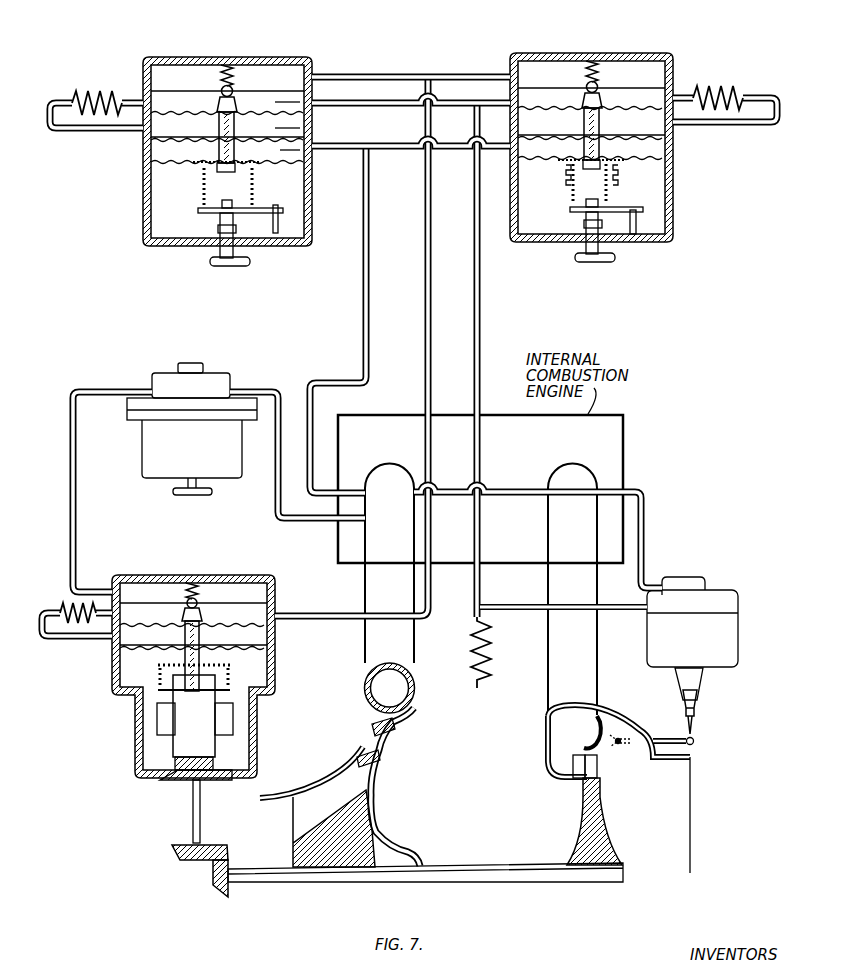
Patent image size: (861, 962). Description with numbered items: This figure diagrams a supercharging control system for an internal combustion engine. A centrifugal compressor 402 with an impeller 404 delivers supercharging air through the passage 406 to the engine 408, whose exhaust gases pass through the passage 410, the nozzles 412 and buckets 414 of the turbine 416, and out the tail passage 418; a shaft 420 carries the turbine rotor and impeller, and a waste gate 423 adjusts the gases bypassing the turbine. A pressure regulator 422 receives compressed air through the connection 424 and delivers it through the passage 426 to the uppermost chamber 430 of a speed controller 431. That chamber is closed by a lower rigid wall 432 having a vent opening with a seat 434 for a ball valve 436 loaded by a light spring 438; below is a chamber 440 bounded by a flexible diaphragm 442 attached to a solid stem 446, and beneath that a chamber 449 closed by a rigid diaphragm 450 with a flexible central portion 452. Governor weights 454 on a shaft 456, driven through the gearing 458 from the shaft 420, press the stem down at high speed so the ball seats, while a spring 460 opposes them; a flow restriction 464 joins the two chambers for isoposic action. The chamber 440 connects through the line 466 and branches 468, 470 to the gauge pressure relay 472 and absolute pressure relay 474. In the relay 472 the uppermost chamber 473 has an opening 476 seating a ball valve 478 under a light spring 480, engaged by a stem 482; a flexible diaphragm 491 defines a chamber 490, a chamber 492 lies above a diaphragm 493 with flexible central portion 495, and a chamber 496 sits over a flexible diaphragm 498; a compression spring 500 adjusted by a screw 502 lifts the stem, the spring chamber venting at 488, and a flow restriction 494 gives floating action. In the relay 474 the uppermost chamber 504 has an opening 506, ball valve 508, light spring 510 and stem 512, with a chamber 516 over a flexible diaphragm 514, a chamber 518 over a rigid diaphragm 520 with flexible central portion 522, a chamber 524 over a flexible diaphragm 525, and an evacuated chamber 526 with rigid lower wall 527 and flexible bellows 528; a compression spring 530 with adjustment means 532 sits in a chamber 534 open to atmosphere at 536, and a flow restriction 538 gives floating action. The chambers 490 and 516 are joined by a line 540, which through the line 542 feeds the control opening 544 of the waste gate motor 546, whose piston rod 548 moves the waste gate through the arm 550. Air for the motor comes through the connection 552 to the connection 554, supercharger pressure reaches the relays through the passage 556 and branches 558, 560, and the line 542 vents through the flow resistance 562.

The centrifugal compressor 402 is at (390, 810).
The impeller 404 is at (302, 835).
The passage 406 is at (410, 658).
The engine 408 is at (507, 468).
The passage 410 is at (548, 540).
The nozzles 412 is at (568, 778).
The buckets 414 is at (598, 770).
The turbine 416 is at (607, 842).
The tail passage 418 is at (690, 836).
The shaft 420 is at (474, 867).
The pressure regulator 422 is at (142, 457).
The waste gate 423 is at (620, 722).
The connection 424 is at (276, 392).
The passage 426 is at (80, 390).
The uppermost chamber 430 is at (258, 594).
The speed controller 431 is at (267, 571).
The lower rigid wall 432 is at (145, 600).
The seat 434 is at (203, 605).
The ball valve 436 is at (198, 600).
The light spring 438 is at (189, 582).
The chamber 440 is at (258, 612).
The flexible diaphragm 442 is at (192, 623).
The solid stem 446 is at (200, 641).
The chamber 449 is at (258, 636).
The rigid diaphragm 450 is at (232, 650).
The flexible central portion 452 is at (172, 662).
The governor weights 454 is at (165, 718).
The shaft 456 is at (192, 813).
The gearing 458 is at (207, 862).
The spring 460 is at (229, 691).
The flow restriction 464 is at (60, 620).
The line 466 is at (430, 288).
The branch 468 is at (364, 74).
The branch 470 is at (456, 74).
The gauge pressure relay 472 is at (156, 46).
The uppermost chamber 473 is at (192, 70).
The absolute pressure relay 474 is at (700, 30).
The opening 476 is at (238, 96).
The ball valve 478 is at (233, 89).
The light spring 480 is at (233, 64).
The stem 482 is at (234, 132).
The vent 488 is at (175, 248).
The chamber 490 is at (280, 102).
The flexible diaphragm 491 is at (196, 116).
The chamber 492 is at (284, 128).
The diaphragm 493 is at (208, 142).
The flow restriction 494 is at (99, 87).
The flexible central portion 495 is at (210, 160).
The chamber 496 is at (290, 150).
The flexible diaphragm 498 is at (169, 184).
The compression spring 500 is at (256, 188).
The screw 502 is at (249, 262).
The uppermost chamber 504 is at (540, 62).
The opening 506 is at (603, 91).
The ball valve 508 is at (597, 84).
The light spring 510 is at (588, 60).
The stem 512 is at (584, 126).
The flexible diaphragm 514 is at (628, 105).
The chamber 516 is at (535, 100).
The chamber 518 is at (530, 121).
The rigid diaphragm 520 is at (542, 138).
The flexible central portion 522 is at (612, 141).
The chamber 524 is at (527, 143).
The flexible diaphragm 525 is at (662, 168).
The evacuated chamber 526 is at (542, 168).
The rigid lower wall 527 is at (652, 182).
The flexible bellows 528 is at (568, 170).
The compression spring 530 is at (612, 204).
The adjustment means 532 is at (614, 262).
The chamber 534 is at (660, 220).
The atmospheric opening 536 is at (546, 246).
The flow restriction 538 is at (724, 87).
The line 540 is at (380, 98).
The line 542 is at (482, 335).
The control opening 544 is at (645, 610).
The waste gate motor 546 is at (735, 639).
The piston rod 548 is at (693, 728).
The arm 550 is at (660, 736).
The connection 552 is at (644, 516).
The connection 554 is at (660, 586).
The passage 556 is at (369, 288).
The branch 558 is at (350, 149).
The branch 560 is at (434, 150).
The flow resistance 562 is at (490, 656).